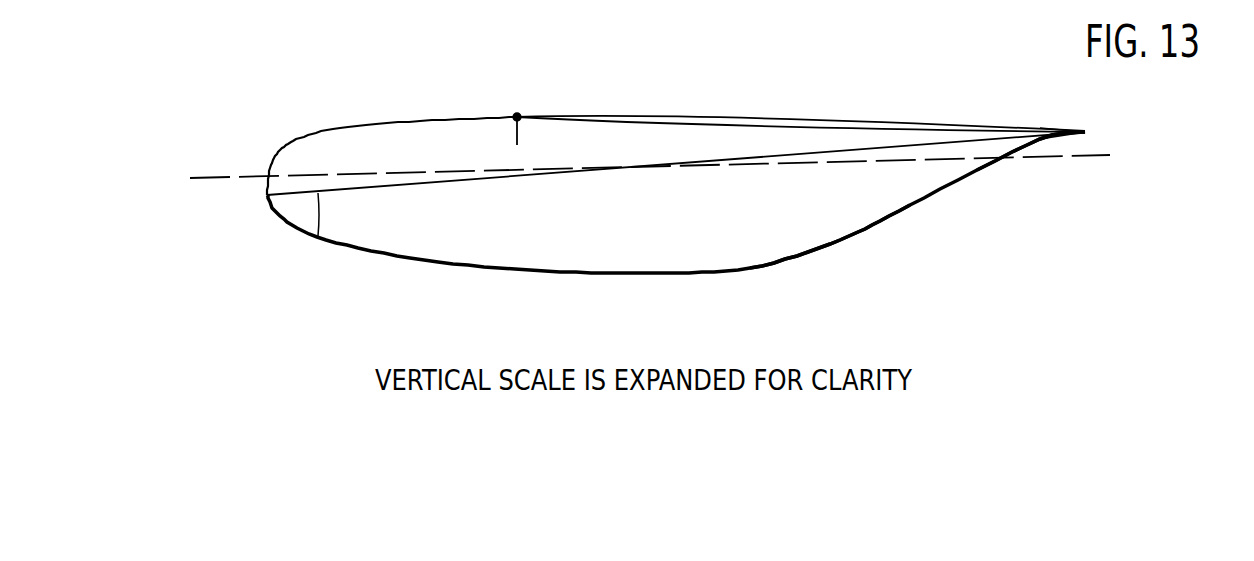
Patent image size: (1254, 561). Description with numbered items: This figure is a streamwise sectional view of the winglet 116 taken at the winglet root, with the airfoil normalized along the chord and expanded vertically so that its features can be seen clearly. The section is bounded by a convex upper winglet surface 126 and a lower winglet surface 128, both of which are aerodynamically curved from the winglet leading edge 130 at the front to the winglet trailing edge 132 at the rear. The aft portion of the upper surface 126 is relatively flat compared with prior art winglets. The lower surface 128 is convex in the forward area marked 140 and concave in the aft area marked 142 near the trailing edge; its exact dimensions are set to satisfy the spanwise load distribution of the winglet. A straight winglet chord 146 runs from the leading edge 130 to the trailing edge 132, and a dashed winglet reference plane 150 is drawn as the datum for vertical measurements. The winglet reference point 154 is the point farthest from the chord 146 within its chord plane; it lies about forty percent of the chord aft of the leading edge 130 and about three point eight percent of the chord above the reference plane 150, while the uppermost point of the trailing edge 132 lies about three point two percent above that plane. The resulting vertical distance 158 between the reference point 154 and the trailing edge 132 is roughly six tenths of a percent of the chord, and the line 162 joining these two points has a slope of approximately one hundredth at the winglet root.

The winglet 116 is at (262, 160).
The upper winglet surface 126 is at (785, 117).
The lower winglet surface 128 is at (752, 268).
The winglet leading edge 130 is at (265, 195).
The winglet trailing edge 132 is at (1085, 132).
The convex area of lower surface 140 is at (530, 271).
The concave area of lower surface 142 is at (1040, 140).
The winglet chord 146 is at (318, 236).
The winglet reference plane 150 is at (1108, 156).
The winglet reference point 154 is at (516, 113).
The vertical distance 158 is at (514, 138).
The line connecting reference point and trailing edge 162 is at (808, 125).